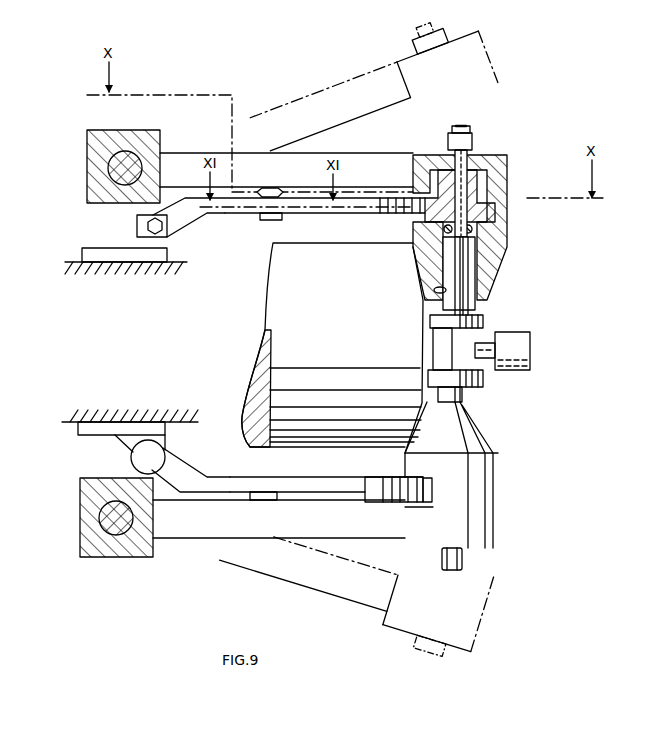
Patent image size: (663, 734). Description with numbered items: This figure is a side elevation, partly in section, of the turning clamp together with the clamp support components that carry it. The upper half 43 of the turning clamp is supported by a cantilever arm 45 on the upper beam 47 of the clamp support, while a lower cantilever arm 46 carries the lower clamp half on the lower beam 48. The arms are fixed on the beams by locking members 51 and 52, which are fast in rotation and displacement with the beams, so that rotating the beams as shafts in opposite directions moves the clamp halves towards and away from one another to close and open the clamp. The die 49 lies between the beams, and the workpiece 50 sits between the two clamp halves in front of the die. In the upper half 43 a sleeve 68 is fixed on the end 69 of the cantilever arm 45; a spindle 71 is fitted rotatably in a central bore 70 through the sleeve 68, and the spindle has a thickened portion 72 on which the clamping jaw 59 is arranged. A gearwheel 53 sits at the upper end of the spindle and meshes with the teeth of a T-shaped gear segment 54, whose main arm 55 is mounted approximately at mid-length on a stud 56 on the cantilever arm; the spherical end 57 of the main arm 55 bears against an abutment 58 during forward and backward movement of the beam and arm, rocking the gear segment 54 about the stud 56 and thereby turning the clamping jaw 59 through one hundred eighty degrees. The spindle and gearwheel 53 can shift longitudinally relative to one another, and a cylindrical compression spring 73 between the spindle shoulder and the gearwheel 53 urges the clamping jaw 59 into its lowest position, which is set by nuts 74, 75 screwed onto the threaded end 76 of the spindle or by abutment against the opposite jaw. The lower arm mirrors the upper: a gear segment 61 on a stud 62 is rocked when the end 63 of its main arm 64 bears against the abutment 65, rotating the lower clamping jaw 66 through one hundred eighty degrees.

The upper half of the turning clamp 43 is at (462, 331).
The cantilever arm 45 is at (186, 153).
The lower cantilever arm 46 is at (187, 531).
The upper beam 47 is at (110, 171).
The lower beam 48 is at (82, 553).
The die 49 is at (280, 307).
The workpiece 50 is at (450, 340).
The locking member 51 is at (88, 144).
The locking member 52 is at (92, 494).
The gearwheel 53 is at (505, 190).
The gear segment 54 is at (388, 214).
The main arm 55 is at (314, 213).
The stud 56 is at (263, 221).
The end of the main arm 57 is at (182, 218).
The abutment 58 is at (126, 244).
The clamping jaw 59 is at (430, 320).
The gear segment 61 is at (375, 487).
The stud 62 is at (268, 477).
The end of the main arm 63 is at (182, 475).
The main arm 64 is at (327, 487).
The abutment 65 is at (131, 458).
The lower clamping jaw 66 is at (428, 373).
The sleeve 68 is at (490, 266).
The end of the cantilever arm 69 is at (488, 160).
The central bore 70 is at (434, 291).
The spindle 71 is at (455, 270).
The thickened portion 72 is at (445, 256).
The cylindrical compression spring 73 is at (500, 238).
The nut 74 is at (448, 142).
The nut 75 is at (455, 128).
The threaded end 76 is at (463, 125).